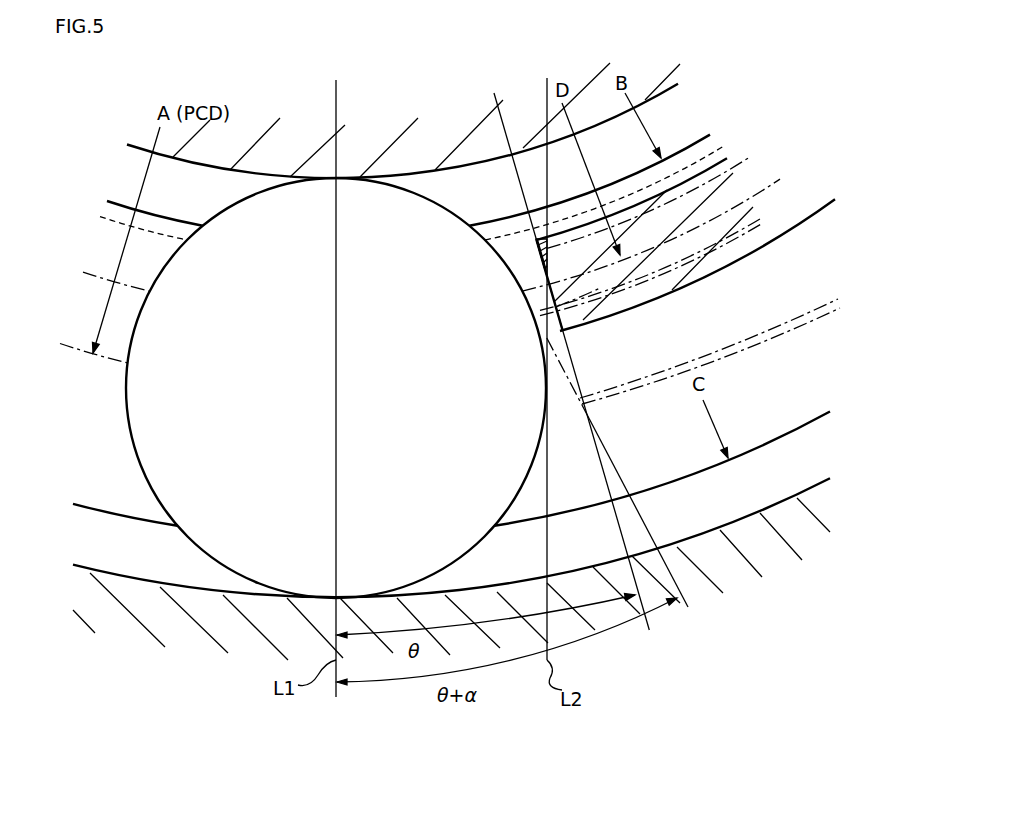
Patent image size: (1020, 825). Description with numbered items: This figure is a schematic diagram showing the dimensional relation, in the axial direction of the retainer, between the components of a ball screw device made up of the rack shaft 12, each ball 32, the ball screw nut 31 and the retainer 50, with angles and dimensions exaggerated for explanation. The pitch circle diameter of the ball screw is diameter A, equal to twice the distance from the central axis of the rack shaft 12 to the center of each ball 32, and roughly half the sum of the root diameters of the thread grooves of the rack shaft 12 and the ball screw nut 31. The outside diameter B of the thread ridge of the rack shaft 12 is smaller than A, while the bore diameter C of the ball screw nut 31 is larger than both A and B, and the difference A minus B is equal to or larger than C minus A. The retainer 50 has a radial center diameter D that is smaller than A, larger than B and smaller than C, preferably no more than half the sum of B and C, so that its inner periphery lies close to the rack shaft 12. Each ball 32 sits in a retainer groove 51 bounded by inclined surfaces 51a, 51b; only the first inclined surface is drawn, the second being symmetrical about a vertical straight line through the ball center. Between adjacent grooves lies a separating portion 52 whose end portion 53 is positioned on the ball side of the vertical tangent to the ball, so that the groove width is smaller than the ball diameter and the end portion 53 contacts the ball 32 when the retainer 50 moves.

The rack shaft 12 is at (395, 153).
The ball screw nut 31 is at (207, 617).
The ball 32 is at (145, 415).
The retainer 50 is at (740, 153).
The retainer groove 51 is at (542, 295).
The inclined surface 51a is at (541, 262).
The inclined surface 51b is at (541, 254).
The separating portion 52 is at (722, 194).
The end portion 53 is at (536, 232).